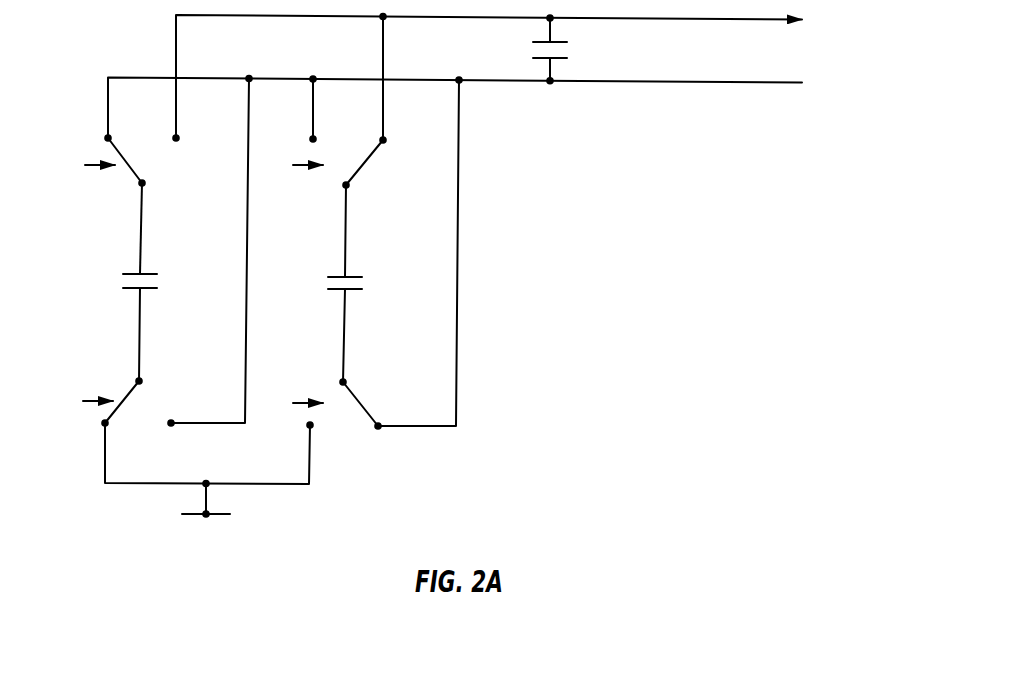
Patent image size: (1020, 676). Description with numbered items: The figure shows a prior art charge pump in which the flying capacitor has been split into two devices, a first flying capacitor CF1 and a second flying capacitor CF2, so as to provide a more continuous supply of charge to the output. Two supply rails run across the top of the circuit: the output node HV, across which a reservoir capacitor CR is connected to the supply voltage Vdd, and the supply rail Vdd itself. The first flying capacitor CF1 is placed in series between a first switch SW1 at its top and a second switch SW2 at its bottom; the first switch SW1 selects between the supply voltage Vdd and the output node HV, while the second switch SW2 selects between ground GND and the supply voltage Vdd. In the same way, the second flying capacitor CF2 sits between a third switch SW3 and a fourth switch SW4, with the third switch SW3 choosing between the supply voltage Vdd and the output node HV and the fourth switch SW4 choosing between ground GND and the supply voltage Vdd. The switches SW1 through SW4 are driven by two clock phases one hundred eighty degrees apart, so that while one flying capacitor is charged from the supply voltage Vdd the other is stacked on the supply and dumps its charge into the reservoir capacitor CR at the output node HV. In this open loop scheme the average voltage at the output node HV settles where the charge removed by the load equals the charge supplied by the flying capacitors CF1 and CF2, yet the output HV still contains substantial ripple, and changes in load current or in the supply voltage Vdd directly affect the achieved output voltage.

The output node HV is at (512, 74).
The supply voltage Vdd is at (486, 105).
The ground GND is at (207, 477).
The reservoir capacitor CR is at (572, 49).
The first flying capacitor CF1 is at (169, 282).
The second flying capacitor CF2 is at (375, 283).
The first switch SW1 is at (152, 160).
The second switch SW2 is at (175, 253).
The third switch SW3 is at (383, 103).
The fourth switch SW4 is at (382, 255).